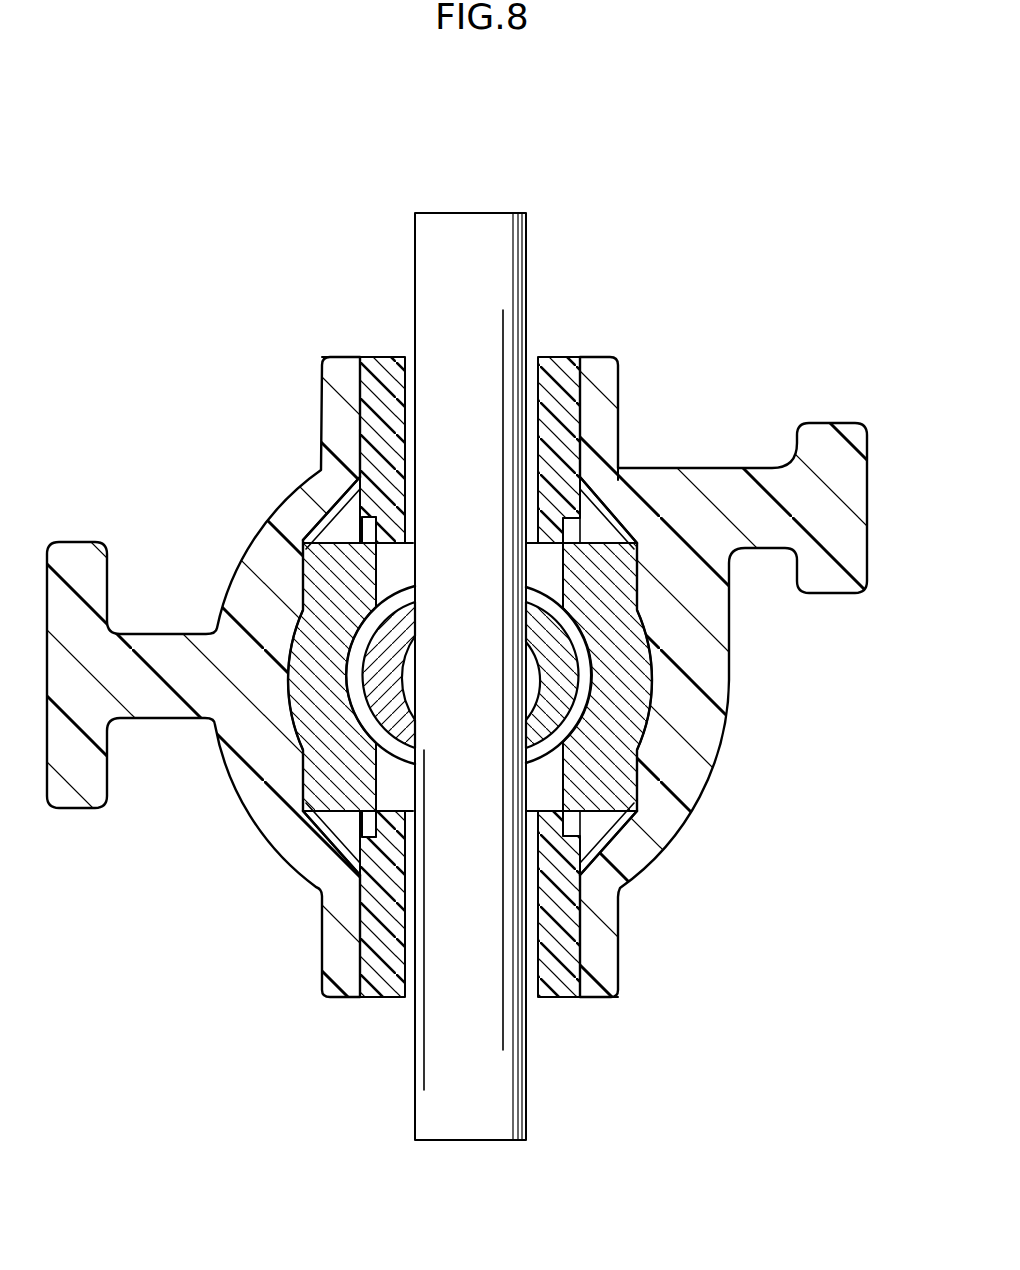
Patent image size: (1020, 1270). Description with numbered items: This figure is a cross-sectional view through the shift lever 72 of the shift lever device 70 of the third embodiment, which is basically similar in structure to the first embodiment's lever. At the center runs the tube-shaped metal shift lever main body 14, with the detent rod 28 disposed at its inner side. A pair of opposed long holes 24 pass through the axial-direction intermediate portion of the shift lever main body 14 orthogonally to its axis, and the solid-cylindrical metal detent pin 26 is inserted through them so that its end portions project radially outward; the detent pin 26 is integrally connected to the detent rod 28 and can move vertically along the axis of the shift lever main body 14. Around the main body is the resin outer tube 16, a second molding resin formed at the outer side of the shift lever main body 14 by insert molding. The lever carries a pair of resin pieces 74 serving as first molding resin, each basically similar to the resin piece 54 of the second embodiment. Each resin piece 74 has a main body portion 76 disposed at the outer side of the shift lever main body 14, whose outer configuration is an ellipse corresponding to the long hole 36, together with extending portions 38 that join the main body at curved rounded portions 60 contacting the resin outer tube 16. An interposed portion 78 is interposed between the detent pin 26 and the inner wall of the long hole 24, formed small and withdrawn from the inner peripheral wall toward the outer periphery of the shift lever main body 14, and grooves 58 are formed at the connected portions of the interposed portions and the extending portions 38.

The shift lever main body 14 is at (318, 722).
The resin outer tube 16 is at (236, 593).
The long hole 24 is at (570, 612).
The detent pin 26 is at (510, 236).
The detent rod 28 is at (553, 684).
The long hole 36 is at (408, 410).
The extending portion 38 is at (268, 540).
The resin piece 54 is at (586, 930).
The groove 58 is at (302, 508).
The rounded portion 60 is at (630, 465).
The shift lever device 70 is at (736, 757).
The shift lever 72 is at (742, 677).
The resin piece 74 is at (355, 427).
The main body portion 76 is at (572, 375).
The interposed portion 78 is at (380, 538).